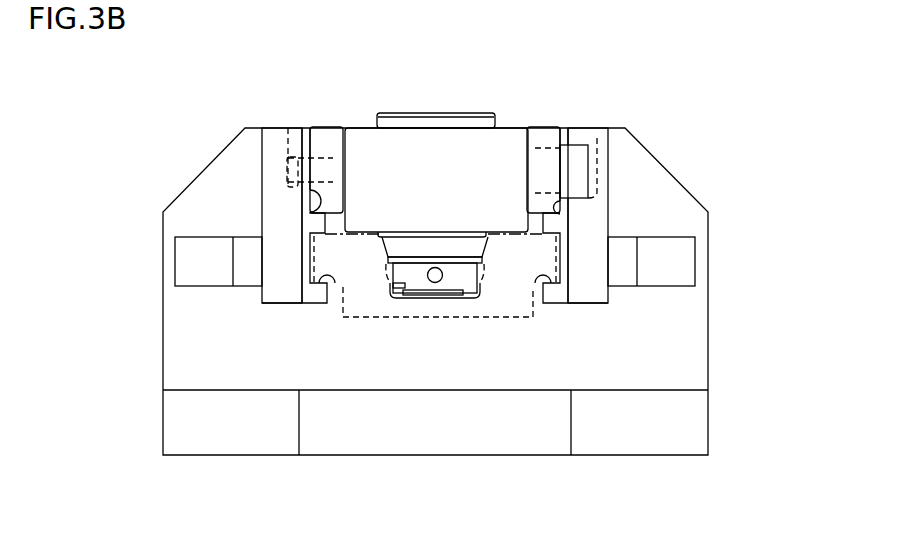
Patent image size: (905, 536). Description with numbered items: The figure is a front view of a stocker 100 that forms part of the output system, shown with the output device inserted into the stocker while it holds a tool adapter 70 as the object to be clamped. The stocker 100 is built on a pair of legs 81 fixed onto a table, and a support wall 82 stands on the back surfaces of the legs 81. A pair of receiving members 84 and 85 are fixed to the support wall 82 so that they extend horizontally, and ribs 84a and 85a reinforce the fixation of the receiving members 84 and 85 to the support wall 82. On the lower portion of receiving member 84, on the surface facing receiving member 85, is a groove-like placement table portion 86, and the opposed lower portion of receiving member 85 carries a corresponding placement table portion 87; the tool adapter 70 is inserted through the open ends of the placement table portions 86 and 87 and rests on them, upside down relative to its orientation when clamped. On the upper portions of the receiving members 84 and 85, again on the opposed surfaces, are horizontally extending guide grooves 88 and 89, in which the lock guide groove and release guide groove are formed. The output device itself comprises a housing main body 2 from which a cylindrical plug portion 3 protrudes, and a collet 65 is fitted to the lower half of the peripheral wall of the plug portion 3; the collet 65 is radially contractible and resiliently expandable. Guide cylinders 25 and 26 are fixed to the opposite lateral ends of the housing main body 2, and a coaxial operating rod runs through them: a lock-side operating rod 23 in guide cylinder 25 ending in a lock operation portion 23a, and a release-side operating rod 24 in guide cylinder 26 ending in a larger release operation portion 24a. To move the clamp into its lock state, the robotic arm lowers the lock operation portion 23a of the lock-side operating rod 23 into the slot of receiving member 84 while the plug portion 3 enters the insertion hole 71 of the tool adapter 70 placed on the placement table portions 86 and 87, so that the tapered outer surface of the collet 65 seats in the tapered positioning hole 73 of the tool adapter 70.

The stocker 100 is at (727, 240).
The support wall 82 is at (682, 183).
The legs 81 is at (163, 427).
The receiving member 84 is at (258, 203).
The receiving member 85 is at (612, 203).
The rib 84a is at (188, 261).
The rib 85a is at (682, 262).
The guide cylinder 25 is at (328, 128).
The guide cylinder 26 is at (548, 128).
The lock-side operating rod 23 is at (290, 128).
The lock operation portion 23a is at (320, 158).
The release-side operating rod 24 is at (598, 140).
The release operation portion 24a is at (563, 160).
The collet 65 is at (435, 247).
The housing main body 2 is at (505, 128).
The tapered positioning hole 73 is at (481, 248).
The plug portion 3 is at (462, 273).
The guide groove 88 is at (315, 207).
The guide groove 89 is at (556, 207).
The placement table portion 86 is at (333, 285).
The placement table portion 87 is at (537, 287).
The insertion hole 71 is at (410, 298).
The tool adapter 70 is at (435, 318).